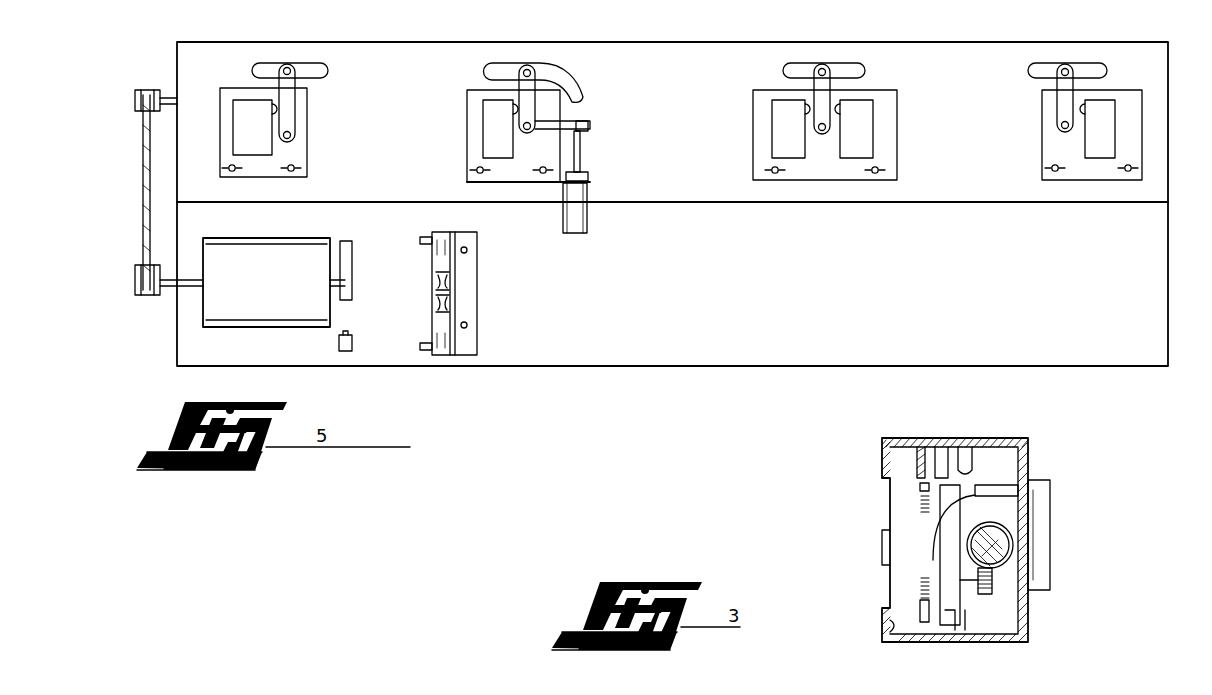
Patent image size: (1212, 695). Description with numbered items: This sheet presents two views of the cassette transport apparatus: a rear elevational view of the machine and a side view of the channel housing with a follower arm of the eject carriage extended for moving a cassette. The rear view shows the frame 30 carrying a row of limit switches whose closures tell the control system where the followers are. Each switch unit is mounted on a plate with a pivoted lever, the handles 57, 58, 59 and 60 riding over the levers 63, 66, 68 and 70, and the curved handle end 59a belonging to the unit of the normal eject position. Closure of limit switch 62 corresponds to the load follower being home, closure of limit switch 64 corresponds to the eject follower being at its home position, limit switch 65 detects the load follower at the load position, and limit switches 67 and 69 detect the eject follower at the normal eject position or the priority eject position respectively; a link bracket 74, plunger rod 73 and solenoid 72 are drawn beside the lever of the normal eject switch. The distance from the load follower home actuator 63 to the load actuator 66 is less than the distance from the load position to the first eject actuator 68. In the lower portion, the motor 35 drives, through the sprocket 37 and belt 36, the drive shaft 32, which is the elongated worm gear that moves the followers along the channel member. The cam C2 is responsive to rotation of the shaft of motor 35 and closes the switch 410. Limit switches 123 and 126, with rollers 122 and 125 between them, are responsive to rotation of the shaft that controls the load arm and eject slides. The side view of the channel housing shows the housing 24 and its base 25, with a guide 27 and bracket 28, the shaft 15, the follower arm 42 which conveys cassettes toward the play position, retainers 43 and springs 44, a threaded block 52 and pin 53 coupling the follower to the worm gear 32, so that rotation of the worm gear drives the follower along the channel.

In FIG. 5, the frame 30 is at (699, 58).
In FIG. 5, the worm gear 32 is at (170, 94).
In FIG. 3, the worm gear 32 is at (1003, 545).
In FIG. 5, the motor 35 is at (140, 93).
In FIG. 5, the drive belt 36 is at (145, 172).
In FIG. 5, the motor sprocket 37 is at (140, 280).
In FIG. 5, the handle 57 is at (1086, 62).
In FIG. 5, the handle 58 is at (846, 62).
In FIG. 5, the handle 59 is at (512, 62).
In FIG. 5, the curved handle end 59a is at (580, 98).
In FIG. 5, the handle 60 is at (273, 62).
In FIG. 5, the limit switch 62 is at (1105, 130).
In FIG. 5, the actuator 63 is at (1065, 97).
In FIG. 5, the limit switch 64 is at (865, 127).
In FIG. 5, the limit switch 65 is at (782, 120).
In FIG. 5, the actuator 66 is at (826, 97).
In FIG. 5, the limit switch 67 is at (490, 122).
In FIG. 3, the limit switch 67 is at (1050, 520).
In FIG. 5, the actuator 68 is at (527, 100).
In FIG. 3, the actuator 68 is at (1002, 490).
In FIG. 5, the limit switch 69 is at (243, 118).
In FIG. 5, the lever arm 70 is at (290, 110).
In FIG. 5, the solenoid 72 is at (576, 238).
In FIG. 5, the plunger rod 73 is at (581, 156).
In FIG. 5, the link bracket 74 is at (586, 122).
In FIG. 5, the cam C2 is at (346, 240).
In FIG. 5, the roller 122 is at (440, 290).
In FIG. 5, the limit switch 123 is at (442, 250).
In FIG. 5, the roller 125 is at (438, 298).
In FIG. 5, the limit switch 126 is at (442, 325).
In FIG. 5, the switch 410 is at (337, 342).
In FIG. 3, the housing 24 is at (902, 450).
In FIG. 3, the housing base 25 is at (884, 624).
In FIG. 3, the guide 27 is at (968, 460).
In FIG. 3, the bracket 28 is at (955, 628).
In FIG. 3, the shaft 15 is at (905, 570).
In FIG. 3, the arm 42 is at (882, 540).
In FIG. 3, the retainer 43 is at (920, 488).
In FIG. 3, the spring 44 is at (921, 506).
In FIG. 3, the threaded block 52 is at (992, 582).
In FIG. 3, the pin 53 is at (965, 582).